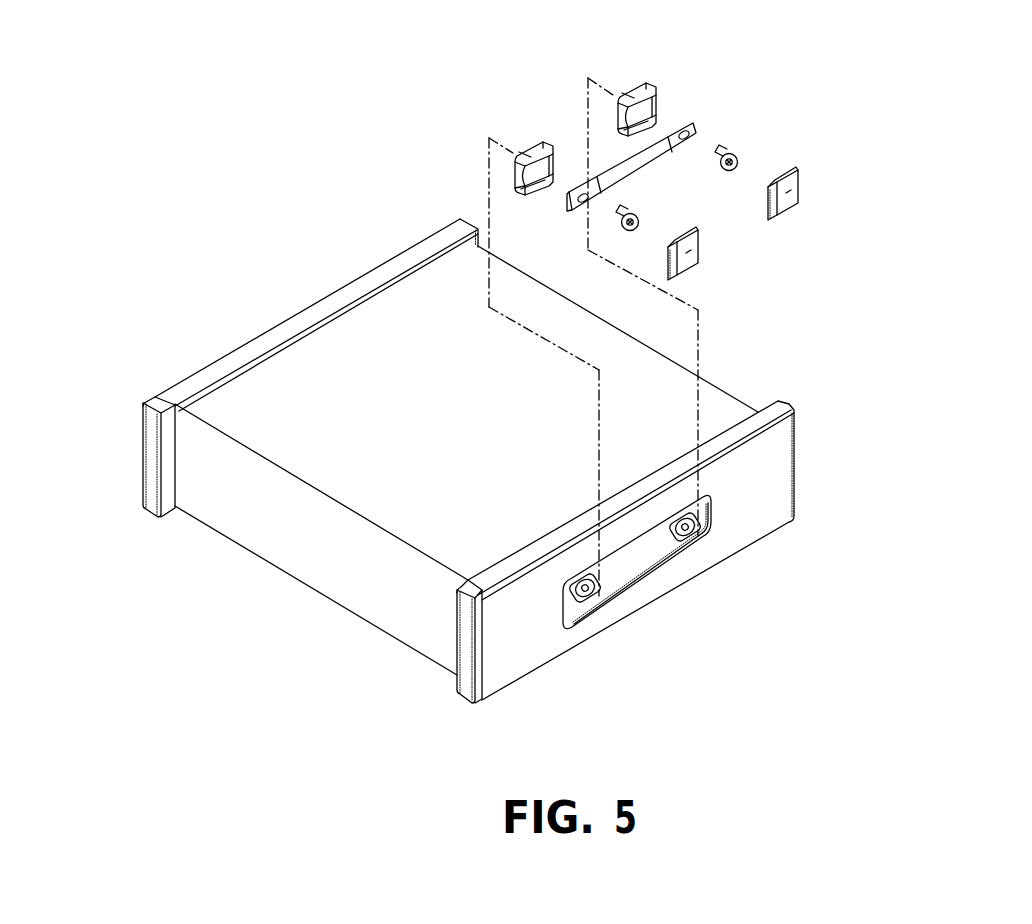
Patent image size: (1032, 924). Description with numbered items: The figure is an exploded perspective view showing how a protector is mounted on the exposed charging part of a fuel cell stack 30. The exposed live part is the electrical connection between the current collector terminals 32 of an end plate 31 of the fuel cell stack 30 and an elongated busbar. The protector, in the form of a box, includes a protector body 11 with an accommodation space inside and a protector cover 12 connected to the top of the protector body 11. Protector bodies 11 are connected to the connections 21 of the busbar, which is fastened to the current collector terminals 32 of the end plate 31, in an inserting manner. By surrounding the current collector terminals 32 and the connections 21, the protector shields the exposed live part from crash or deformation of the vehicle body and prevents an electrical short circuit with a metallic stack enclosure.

The protector body 11 is at (633, 82).
The protector cover 12 is at (798, 178).
The connection 21 is at (592, 200).
The fuel cell stack 30 is at (682, 621).
The end plate 31 is at (150, 487).
The current collector terminal 32 is at (713, 507).